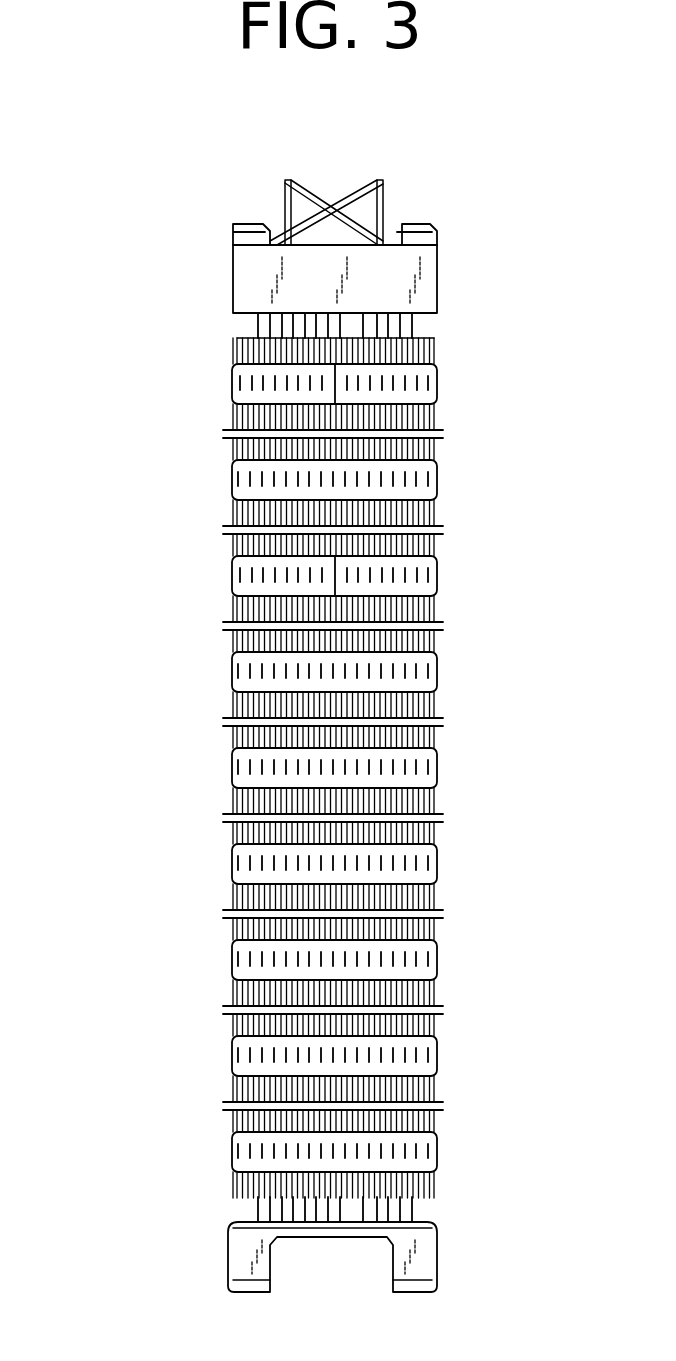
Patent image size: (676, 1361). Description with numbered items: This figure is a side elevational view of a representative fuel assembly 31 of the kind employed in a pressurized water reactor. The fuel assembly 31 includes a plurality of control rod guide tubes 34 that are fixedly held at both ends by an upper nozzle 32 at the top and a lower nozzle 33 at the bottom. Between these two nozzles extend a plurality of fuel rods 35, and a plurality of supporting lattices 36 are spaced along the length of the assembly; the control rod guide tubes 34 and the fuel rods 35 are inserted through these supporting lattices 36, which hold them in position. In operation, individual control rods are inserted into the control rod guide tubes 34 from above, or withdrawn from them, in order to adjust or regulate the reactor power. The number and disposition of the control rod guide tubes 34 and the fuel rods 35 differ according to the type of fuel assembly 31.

The fuel assembly 31 is at (203, 691).
The upper nozzle 32 is at (437, 273).
The lower nozzle 33 is at (437, 1256).
The control rod guide tubes 34 is at (415, 327).
The fuel rods 35 is at (437, 352).
The supporting lattices 36 is at (433, 480).